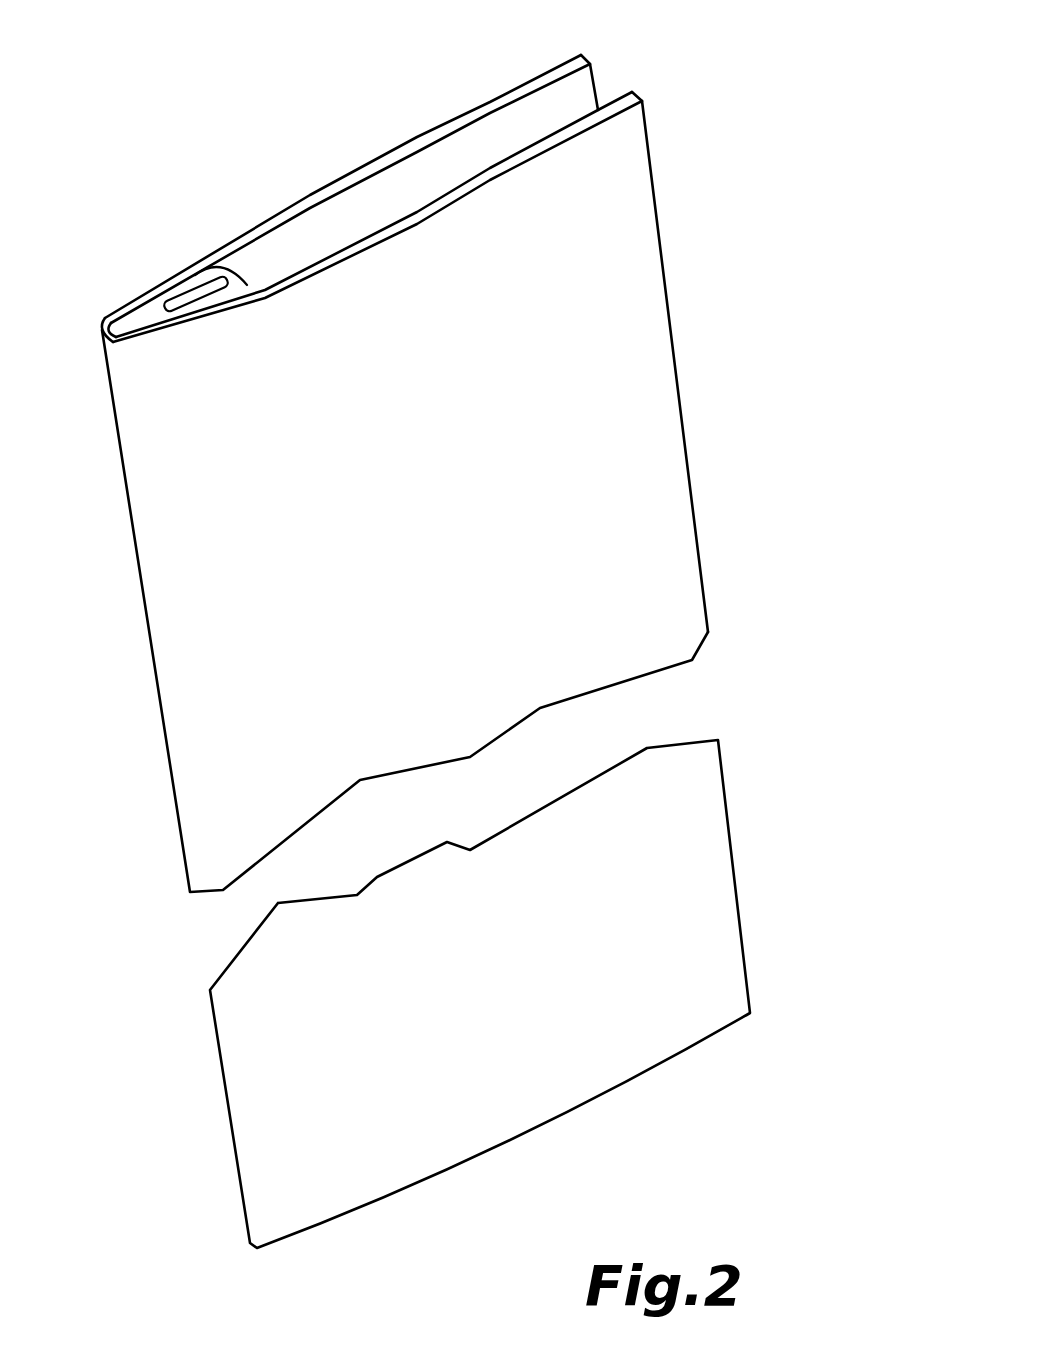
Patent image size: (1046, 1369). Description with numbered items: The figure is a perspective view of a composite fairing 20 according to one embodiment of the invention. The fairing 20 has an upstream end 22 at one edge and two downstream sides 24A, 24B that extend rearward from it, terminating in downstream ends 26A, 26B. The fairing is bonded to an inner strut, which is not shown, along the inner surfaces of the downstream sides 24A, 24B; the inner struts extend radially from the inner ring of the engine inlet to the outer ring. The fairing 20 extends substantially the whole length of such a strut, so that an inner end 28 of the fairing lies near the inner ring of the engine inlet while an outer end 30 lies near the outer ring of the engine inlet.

The composite fairing 20 is at (722, 304).
The upstream end 22 is at (150, 652).
The downstream side 24A is at (428, 493).
The downstream side 24B is at (367, 210).
The downstream end 26A is at (697, 465).
The downstream end 26B is at (587, 62).
The inner end 28 is at (655, 1072).
The outer end 30 is at (230, 243).